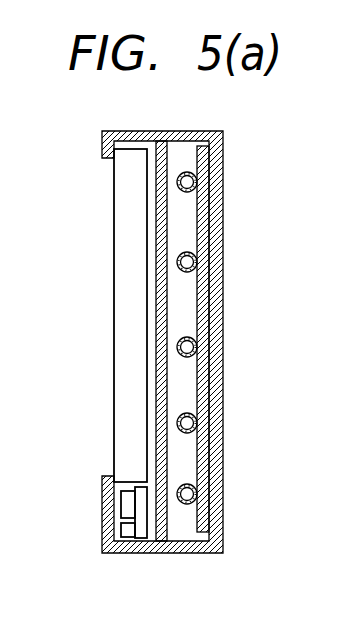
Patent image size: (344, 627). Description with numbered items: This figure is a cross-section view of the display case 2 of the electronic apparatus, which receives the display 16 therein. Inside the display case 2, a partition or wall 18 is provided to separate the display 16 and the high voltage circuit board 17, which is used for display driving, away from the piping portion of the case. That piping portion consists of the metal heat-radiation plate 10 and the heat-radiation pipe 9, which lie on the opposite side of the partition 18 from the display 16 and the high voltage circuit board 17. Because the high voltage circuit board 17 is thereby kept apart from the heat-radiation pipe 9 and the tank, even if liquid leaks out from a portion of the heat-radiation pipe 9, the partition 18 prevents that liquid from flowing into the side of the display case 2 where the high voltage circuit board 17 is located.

The display case 2 is at (160, 372).
The heat-radiation pipe 9 is at (212, 353).
The metal heat-radiation plate 10 is at (208, 446).
The display 16 is at (114, 227).
The high voltage circuit board 17 is at (128, 507).
The partition 18 is at (156, 319).